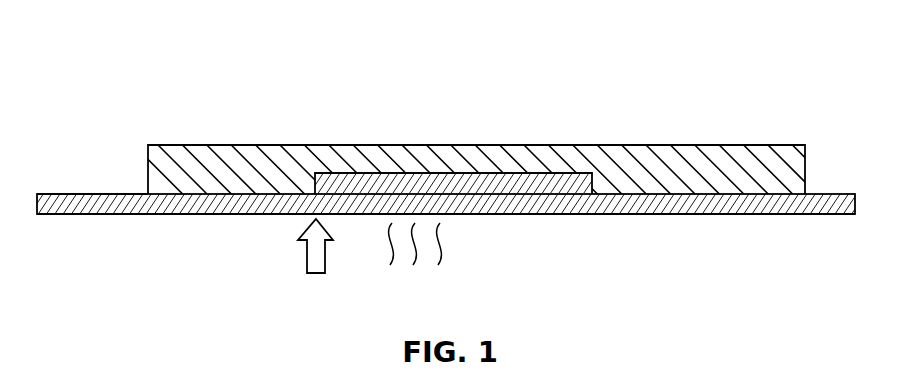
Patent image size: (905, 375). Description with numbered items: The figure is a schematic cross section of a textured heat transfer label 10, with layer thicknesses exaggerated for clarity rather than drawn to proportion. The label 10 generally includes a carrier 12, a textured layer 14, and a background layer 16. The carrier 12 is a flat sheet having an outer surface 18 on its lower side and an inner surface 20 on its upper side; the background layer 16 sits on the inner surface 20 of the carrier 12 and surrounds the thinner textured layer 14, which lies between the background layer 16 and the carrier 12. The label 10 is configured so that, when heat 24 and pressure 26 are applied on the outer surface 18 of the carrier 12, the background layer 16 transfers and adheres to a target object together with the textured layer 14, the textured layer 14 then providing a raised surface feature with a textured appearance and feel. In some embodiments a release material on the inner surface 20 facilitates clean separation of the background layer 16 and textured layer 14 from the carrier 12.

The textured heat transfer label 10 is at (448, 153).
The carrier 12 is at (787, 203).
The textured layer 14 is at (554, 172).
The background layer 16 is at (703, 148).
The outer surface 18 is at (130, 215).
The inner surface 20 is at (72, 193).
The heat 24 is at (440, 241).
The pressure 26 is at (307, 259).